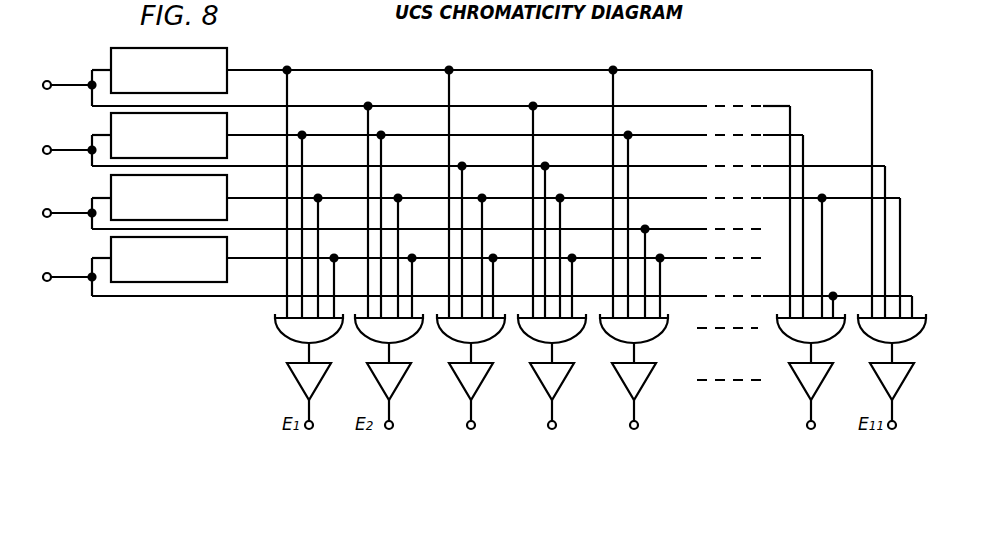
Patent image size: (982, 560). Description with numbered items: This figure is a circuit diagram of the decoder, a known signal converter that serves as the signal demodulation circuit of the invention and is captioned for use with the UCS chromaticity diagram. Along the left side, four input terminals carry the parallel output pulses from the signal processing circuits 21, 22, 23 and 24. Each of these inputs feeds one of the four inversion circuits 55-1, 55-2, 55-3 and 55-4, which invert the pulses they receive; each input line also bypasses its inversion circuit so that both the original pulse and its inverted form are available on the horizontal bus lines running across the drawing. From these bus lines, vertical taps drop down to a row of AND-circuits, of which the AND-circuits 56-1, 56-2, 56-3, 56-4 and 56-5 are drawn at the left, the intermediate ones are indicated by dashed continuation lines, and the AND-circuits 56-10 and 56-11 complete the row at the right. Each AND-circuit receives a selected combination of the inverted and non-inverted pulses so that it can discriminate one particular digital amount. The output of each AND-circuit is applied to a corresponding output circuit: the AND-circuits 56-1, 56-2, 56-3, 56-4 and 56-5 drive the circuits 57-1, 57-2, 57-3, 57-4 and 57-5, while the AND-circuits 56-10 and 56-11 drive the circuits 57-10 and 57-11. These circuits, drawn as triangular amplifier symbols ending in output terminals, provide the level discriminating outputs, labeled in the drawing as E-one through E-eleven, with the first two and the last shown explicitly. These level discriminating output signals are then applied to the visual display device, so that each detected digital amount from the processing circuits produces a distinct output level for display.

The signal processing circuit 21 is at (73, 89).
The signal processing circuit 22 is at (73, 154).
The signal processing circuit 23 is at (73, 218).
The signal processing circuit 24 is at (73, 281).
The inversion circuit 55-1 is at (235, 48).
The inversion circuit 55-2 is at (235, 118).
The inversion circuit 55-3 is at (235, 179).
The inversion circuit 55-4 is at (235, 241).
The AND-circuit 56-1 is at (278, 326).
The AND-circuit 56-2 is at (363, 333).
The AND-circuit 56-3 is at (443, 333).
The AND-circuit 56-4 is at (525, 333).
The AND-circuit 56-5 is at (634, 328).
The AND-circuit 56-10 is at (792, 334).
The AND-circuit 56-11 is at (885, 338).
The output circuit 57-1 is at (295, 380).
The output circuit 57-2 is at (373, 377).
The output circuit 57-3 is at (455, 377).
The output circuit 57-4 is at (552, 381).
The output circuit 57-5 is at (634, 381).
The output circuit 57-10 is at (798, 380).
The output circuit 57-11 is at (884, 382).